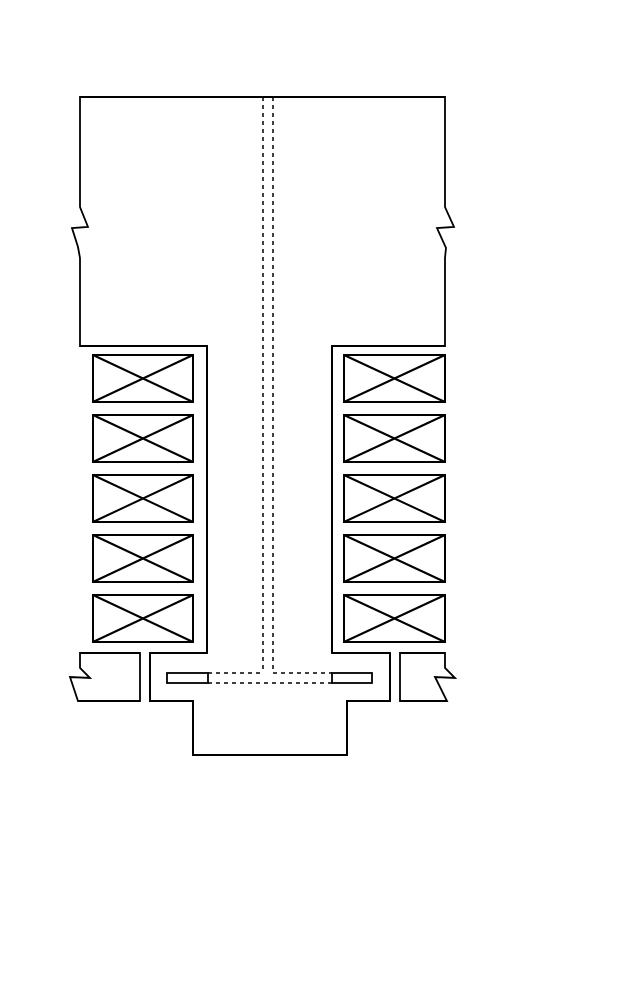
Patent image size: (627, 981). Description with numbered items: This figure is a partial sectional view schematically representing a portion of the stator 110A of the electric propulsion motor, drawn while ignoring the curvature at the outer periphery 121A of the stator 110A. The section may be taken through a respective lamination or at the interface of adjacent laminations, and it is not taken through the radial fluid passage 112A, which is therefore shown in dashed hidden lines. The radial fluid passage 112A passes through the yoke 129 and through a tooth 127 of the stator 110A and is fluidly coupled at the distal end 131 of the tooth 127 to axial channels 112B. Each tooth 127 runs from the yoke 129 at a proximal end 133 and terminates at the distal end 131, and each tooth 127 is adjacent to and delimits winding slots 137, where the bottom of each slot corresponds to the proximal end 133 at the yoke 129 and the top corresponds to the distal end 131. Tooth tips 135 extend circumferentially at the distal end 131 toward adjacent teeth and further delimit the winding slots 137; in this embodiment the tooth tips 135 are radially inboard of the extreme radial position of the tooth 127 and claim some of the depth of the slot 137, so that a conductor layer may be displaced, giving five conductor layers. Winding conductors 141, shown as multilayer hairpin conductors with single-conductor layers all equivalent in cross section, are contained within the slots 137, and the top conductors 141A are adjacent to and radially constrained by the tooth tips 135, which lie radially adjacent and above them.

The stator 110A is at (185, 55).
The outer periphery 121A is at (229, 97).
The radial fluid passage 112A is at (273, 178).
The yoke 129 is at (432, 181).
The proximal end 133 is at (237, 352).
The tooth 127 is at (302, 432).
The winding slot 137 is at (340, 372).
The winding conductors 141 is at (500, 560).
The top conductors 141A is at (447, 615).
The axial channels 112B is at (187, 683).
The distal end 131 is at (290, 762).
The tooth tips 135 is at (348, 704).